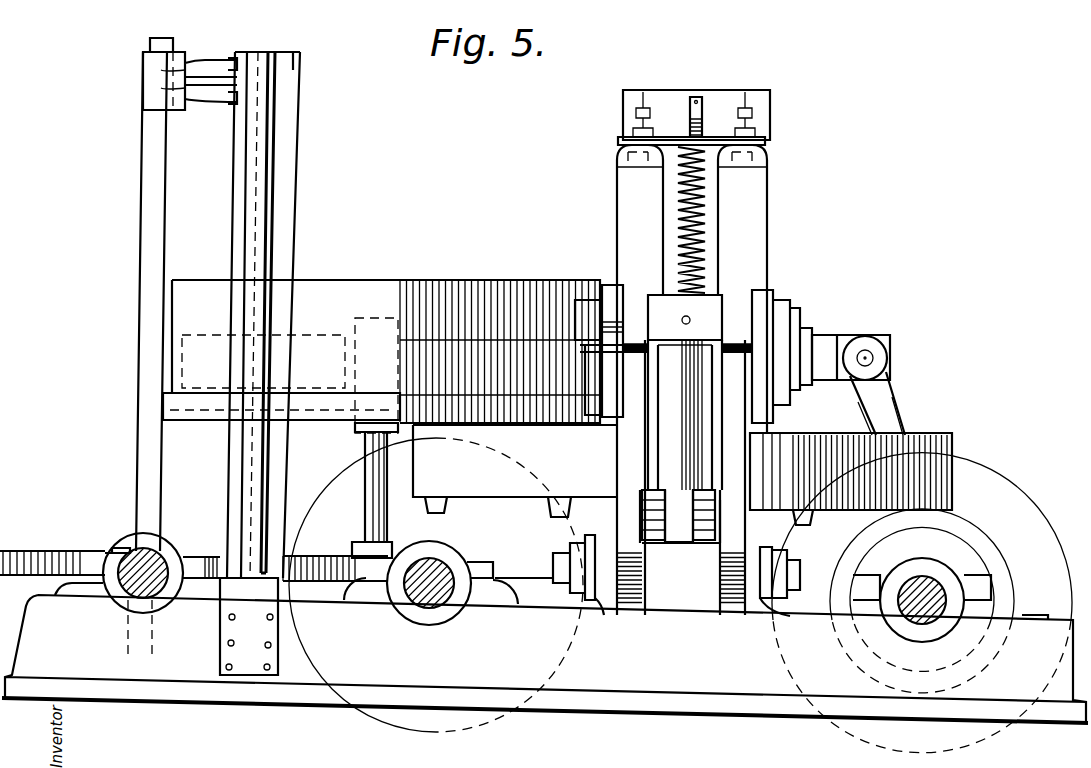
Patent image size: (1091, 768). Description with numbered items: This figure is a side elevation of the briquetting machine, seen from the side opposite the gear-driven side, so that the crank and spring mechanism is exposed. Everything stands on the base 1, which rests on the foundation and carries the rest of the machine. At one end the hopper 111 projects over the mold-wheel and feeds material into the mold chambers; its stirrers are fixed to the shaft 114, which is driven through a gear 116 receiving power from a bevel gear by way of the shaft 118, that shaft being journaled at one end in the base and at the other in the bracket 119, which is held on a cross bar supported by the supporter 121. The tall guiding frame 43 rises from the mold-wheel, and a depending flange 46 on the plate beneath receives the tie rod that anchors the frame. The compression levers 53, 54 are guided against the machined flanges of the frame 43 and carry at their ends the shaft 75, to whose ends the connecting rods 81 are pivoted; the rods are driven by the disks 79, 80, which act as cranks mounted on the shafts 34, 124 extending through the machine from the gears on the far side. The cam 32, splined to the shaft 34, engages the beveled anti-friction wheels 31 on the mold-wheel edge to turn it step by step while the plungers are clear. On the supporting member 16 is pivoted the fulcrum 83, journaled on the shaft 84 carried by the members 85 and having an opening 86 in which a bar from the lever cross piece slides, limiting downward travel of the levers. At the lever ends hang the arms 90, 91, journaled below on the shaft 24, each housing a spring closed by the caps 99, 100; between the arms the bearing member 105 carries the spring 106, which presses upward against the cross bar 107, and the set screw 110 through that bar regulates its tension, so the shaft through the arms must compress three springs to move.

The base 1 is at (100, 642).
The supporting member 16 is at (607, 604).
The shaft 24 is at (553, 571).
The anti-friction wheels 31 is at (546, 509).
The cam 32 is at (1003, 580).
The shaft 34 is at (926, 580).
The frame 43 is at (716, 92).
The depending flange 46 is at (153, 596).
The compression lever 53 is at (764, 311).
The compression lever 54 is at (605, 293).
The shaft 75 is at (818, 343).
The disk 79 is at (978, 474).
The disk 80 is at (340, 473).
The connecting rod 81 is at (876, 396).
The fulcrum 83 is at (685, 441).
The shaft 84 is at (717, 523).
The members 85 is at (650, 492).
The opening 86 is at (714, 496).
The arm 90 is at (757, 211).
The arm 91 is at (633, 183).
The cap 99 is at (768, 159).
The cap 100 is at (622, 153).
The bearing member 105 is at (735, 281).
The spring 106 is at (706, 239).
The cross bar 107 is at (712, 140).
The set screw 110 is at (697, 97).
The hopper 111 is at (417, 293).
The shaft 114 is at (363, 515).
The gear 116 is at (30, 547).
The shaft 118 is at (144, 173).
The bracket 119 is at (143, 73).
The supporter 121 is at (278, 161).
The shaft 124 is at (429, 607).